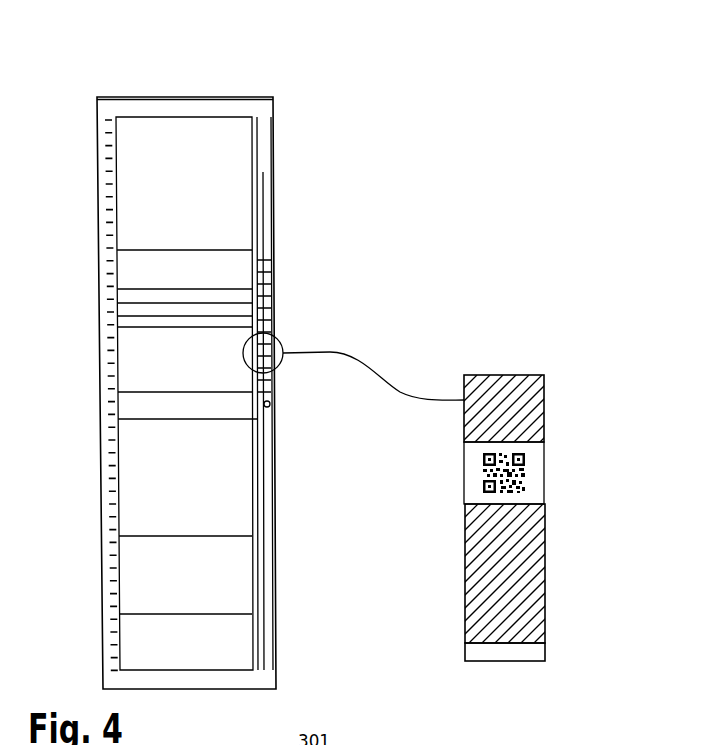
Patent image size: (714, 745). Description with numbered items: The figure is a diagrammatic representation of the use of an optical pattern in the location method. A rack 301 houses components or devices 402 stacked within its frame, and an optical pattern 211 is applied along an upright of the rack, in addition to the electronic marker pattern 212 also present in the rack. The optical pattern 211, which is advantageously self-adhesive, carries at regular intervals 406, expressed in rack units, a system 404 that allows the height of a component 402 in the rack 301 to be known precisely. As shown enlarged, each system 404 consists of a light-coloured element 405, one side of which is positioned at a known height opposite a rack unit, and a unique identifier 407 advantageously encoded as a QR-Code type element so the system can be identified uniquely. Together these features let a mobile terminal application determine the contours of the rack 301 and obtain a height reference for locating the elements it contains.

The rack 301 is at (171, 97).
The component 402 is at (180, 322).
The system 404 is at (272, 329).
The electronic marker pattern 212 is at (272, 404).
The light-coloured element 405 is at (527, 500).
The unique identifier 407 is at (523, 482).
The optical pattern 211 is at (532, 531).
The regular intervals 406 is at (445, 440).